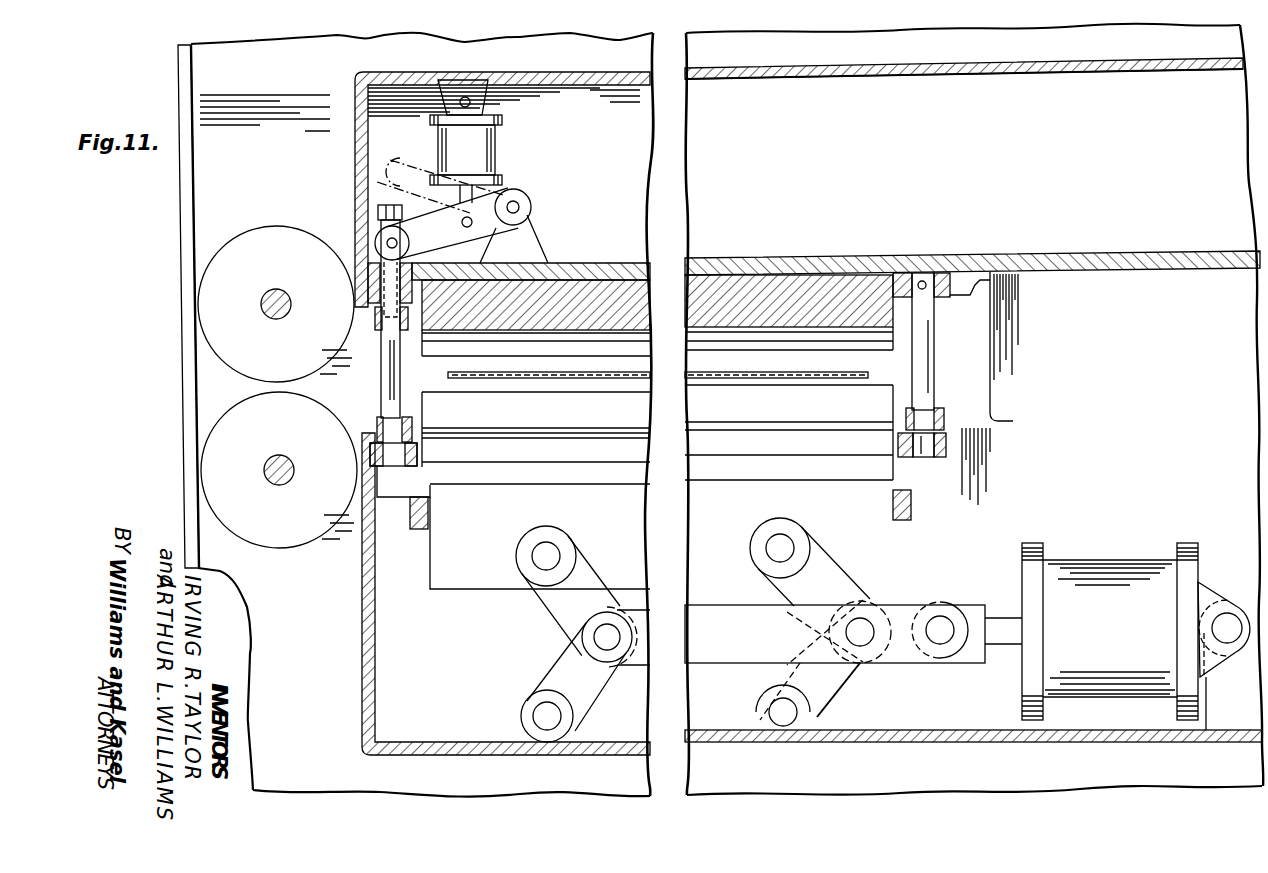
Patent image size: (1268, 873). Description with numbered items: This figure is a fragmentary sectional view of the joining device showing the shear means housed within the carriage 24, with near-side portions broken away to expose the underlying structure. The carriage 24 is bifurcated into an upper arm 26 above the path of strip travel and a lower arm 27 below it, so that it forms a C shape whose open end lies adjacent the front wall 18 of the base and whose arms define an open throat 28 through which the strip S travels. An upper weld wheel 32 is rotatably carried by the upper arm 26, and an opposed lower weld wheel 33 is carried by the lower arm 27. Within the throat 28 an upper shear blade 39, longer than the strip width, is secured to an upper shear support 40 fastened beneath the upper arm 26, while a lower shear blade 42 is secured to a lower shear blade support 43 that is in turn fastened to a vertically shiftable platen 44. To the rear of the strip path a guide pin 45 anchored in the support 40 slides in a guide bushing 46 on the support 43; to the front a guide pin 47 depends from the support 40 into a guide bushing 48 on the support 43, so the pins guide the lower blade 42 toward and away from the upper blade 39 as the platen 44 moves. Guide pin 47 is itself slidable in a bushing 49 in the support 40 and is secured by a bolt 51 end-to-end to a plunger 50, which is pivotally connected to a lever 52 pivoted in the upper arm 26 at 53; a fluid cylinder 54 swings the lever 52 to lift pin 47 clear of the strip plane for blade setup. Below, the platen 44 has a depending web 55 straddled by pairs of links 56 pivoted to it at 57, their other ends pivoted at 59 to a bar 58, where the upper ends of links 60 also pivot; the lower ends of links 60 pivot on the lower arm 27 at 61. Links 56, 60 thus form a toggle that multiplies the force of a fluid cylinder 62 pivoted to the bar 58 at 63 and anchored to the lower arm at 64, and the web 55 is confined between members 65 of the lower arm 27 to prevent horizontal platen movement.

The front wall 18 is at (181, 258).
The carriage 24 is at (831, 63).
The upper arm 26 is at (358, 138).
The lower arm 27 is at (363, 658).
The open throat 28 is at (988, 365).
The upper weld wheel 32 is at (243, 241).
The lower weld wheel 33 is at (263, 530).
The upper shear blade 39 is at (821, 340).
The upper shear support 40 is at (768, 293).
The lower shear blade 42 is at (793, 415).
The lower shear blade support 43 is at (601, 450).
The platen 44 is at (740, 470).
The guide pin 45 is at (933, 323).
The guide bushing 46 is at (946, 418).
The guide pin 47 is at (383, 386).
The guide bushing 48 is at (373, 422).
The bushing 49 is at (356, 319).
The plunger 50 is at (381, 275).
The bolt 51 is at (378, 210).
The lever 52 is at (421, 244).
The pivot 53 is at (519, 206).
The fluid cylinder 54 is at (478, 152).
The depending web 55 is at (469, 536).
The links 56 is at (552, 602).
The pivot 57 is at (554, 555).
The bar 58 is at (726, 647).
The pivot 59 is at (591, 638).
The links 60 is at (589, 697).
The pivot 61 is at (540, 715).
The fluid cylinder 62 is at (1106, 568).
The pivot 63 is at (941, 629).
The pivotal anchor 64 is at (1227, 613).
The members 65 is at (412, 531).
The strip S is at (539, 379).